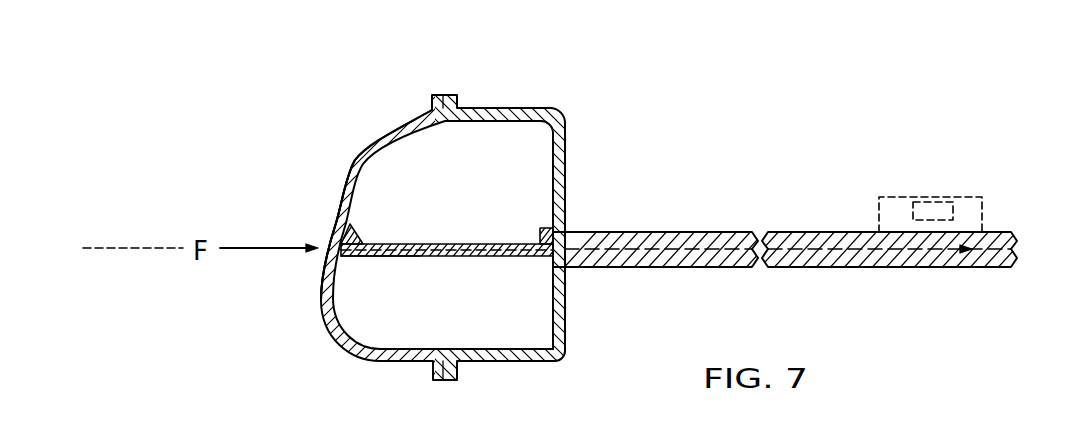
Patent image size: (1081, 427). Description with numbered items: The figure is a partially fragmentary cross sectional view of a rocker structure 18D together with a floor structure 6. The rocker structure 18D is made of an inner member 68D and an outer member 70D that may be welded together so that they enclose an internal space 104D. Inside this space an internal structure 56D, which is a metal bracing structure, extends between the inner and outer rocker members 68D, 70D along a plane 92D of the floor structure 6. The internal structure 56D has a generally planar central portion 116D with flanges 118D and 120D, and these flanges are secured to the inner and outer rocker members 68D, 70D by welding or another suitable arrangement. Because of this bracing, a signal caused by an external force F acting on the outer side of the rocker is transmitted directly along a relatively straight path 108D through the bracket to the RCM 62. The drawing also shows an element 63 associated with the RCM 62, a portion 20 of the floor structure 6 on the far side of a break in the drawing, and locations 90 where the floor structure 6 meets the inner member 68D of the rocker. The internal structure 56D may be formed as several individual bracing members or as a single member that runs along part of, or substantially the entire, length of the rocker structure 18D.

The floor structure 6 is at (682, 268).
The rod 20 is at (788, 268).
The RCM 62 is at (918, 197).
The sensor element 63 is at (953, 210).
The seal 90 is at (567, 229).
The rocker structure 18D is at (375, 135).
The internal structure 56D is at (417, 244).
The inner member 68D is at (518, 105).
The outer member 70D is at (339, 186).
The plane 92D is at (143, 248).
The internal space 104D is at (520, 300).
The straight path 108D is at (683, 247).
The central portion 116D is at (389, 257).
The flange 118D is at (353, 226).
The flange 120D is at (540, 228).